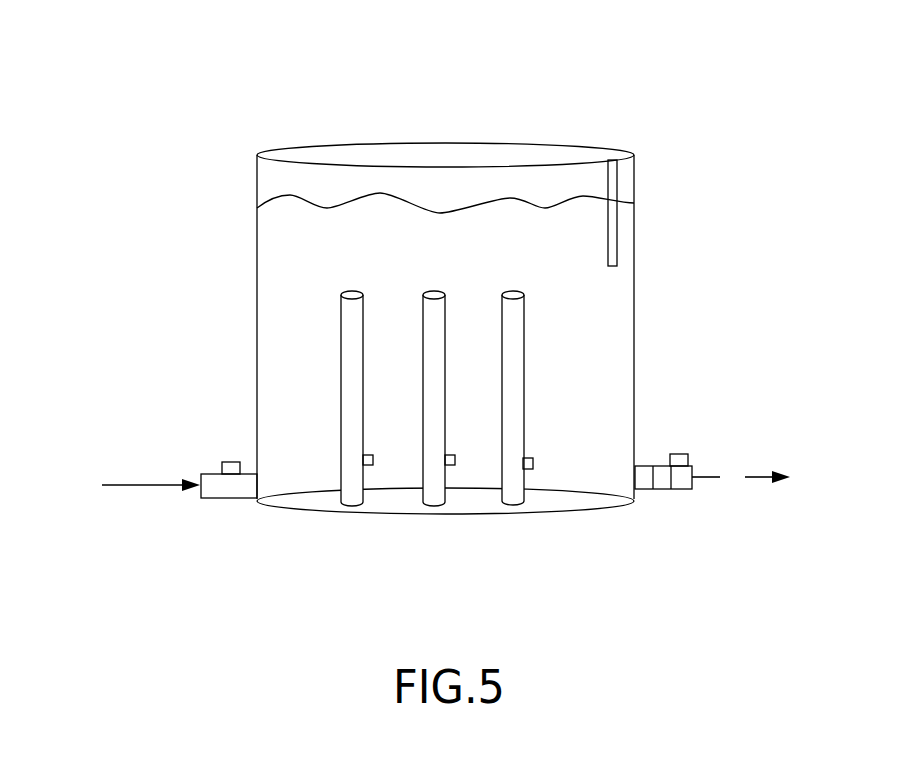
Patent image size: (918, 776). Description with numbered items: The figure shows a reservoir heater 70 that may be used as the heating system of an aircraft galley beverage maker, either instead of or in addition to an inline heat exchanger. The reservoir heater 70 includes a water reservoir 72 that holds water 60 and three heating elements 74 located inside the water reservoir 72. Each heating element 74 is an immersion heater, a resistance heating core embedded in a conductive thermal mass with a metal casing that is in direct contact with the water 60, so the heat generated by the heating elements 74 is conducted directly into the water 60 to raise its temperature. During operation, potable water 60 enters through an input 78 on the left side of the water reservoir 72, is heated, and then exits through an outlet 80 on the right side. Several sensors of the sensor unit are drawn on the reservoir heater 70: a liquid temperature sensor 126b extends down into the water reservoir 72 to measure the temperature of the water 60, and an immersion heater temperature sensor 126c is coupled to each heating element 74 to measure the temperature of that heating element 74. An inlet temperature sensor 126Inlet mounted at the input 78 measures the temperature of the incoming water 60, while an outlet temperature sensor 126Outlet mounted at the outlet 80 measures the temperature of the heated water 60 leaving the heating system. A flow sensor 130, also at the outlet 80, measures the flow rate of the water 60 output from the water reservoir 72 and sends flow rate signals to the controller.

The reservoir heater 70 is at (669, 121).
The water reservoir 72 is at (257, 180).
The water 60 is at (561, 256).
The heating element 74 is at (352, 294).
The liquid temperature sensor 126b is at (610, 230).
The immersion heater temperature sensor 126c is at (368, 454).
The input 78 is at (256, 490).
The inlet temperature sensor 126Inlet is at (232, 462).
The outlet 80 is at (640, 465).
The flow sensor 130 is at (660, 482).
The outlet temperature sensor 126Outlet is at (680, 457).